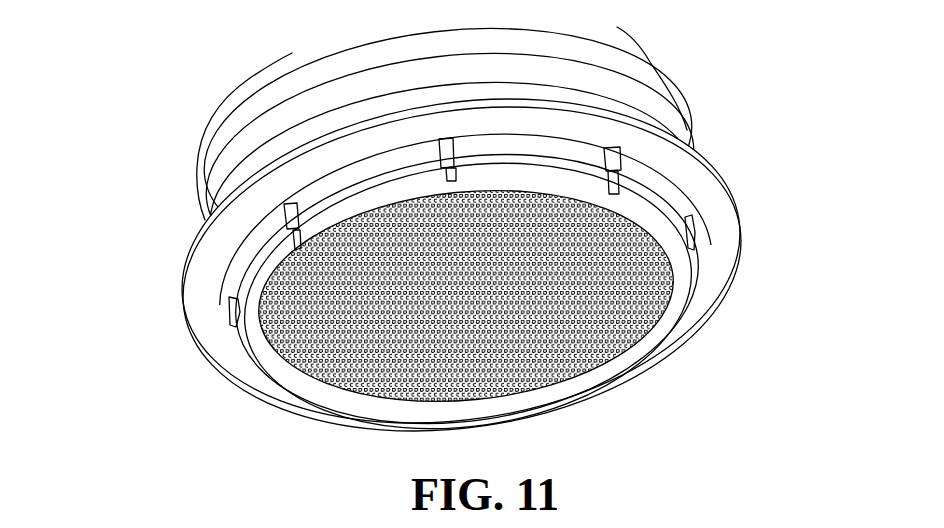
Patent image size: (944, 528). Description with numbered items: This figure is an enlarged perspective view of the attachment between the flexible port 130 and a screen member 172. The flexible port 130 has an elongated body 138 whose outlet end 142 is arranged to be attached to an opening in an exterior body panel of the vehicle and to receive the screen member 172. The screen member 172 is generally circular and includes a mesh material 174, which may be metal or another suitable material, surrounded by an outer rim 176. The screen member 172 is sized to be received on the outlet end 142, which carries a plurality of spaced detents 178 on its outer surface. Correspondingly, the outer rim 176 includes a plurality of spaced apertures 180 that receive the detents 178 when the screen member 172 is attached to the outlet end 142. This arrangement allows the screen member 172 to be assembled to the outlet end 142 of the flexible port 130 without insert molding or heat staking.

The flexible port 130 is at (448, 236).
The elongated body 138 is at (643, 62).
The outlet end 142 is at (694, 130).
The screen member 172 is at (586, 401).
The mesh material 174 is at (363, 351).
The outer rim 176 is at (660, 362).
The detents 178 is at (448, 178).
The apertures 180 is at (637, 210).